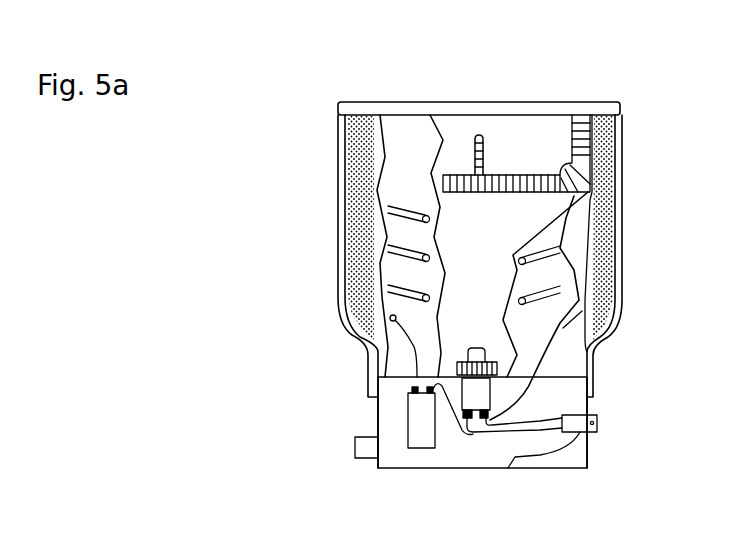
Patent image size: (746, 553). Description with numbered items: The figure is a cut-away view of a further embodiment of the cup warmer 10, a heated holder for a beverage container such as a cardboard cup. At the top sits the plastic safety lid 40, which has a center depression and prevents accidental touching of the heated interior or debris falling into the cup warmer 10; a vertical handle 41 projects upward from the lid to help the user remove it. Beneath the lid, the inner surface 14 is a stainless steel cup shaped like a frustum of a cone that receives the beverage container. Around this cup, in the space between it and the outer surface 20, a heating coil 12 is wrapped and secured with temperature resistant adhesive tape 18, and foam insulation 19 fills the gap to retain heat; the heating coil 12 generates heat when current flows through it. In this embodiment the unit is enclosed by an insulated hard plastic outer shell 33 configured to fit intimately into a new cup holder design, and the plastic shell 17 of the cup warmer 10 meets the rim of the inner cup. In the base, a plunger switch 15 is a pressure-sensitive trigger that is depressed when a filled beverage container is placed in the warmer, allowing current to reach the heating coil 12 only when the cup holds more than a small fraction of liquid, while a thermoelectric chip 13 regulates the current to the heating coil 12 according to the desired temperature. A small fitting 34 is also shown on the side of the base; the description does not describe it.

The cup warmer 10 is at (623, 286).
The heating coil 12 is at (388, 253).
The thermoelectric chip 13 is at (420, 437).
The inner surface 14 is at (555, 352).
The plunger switch 15 is at (475, 402).
The plastic shell 17 is at (597, 423).
The temperature resistant adhesive tape 18 is at (606, 155).
The foam insulation 19 is at (380, 198).
The outer surface 20 is at (568, 457).
The insulated hard plastic outer shell 33 is at (624, 222).
The switch 34 is at (355, 448).
The plastic safety lid 40 is at (621, 107).
The vertical handle 41 is at (478, 123).